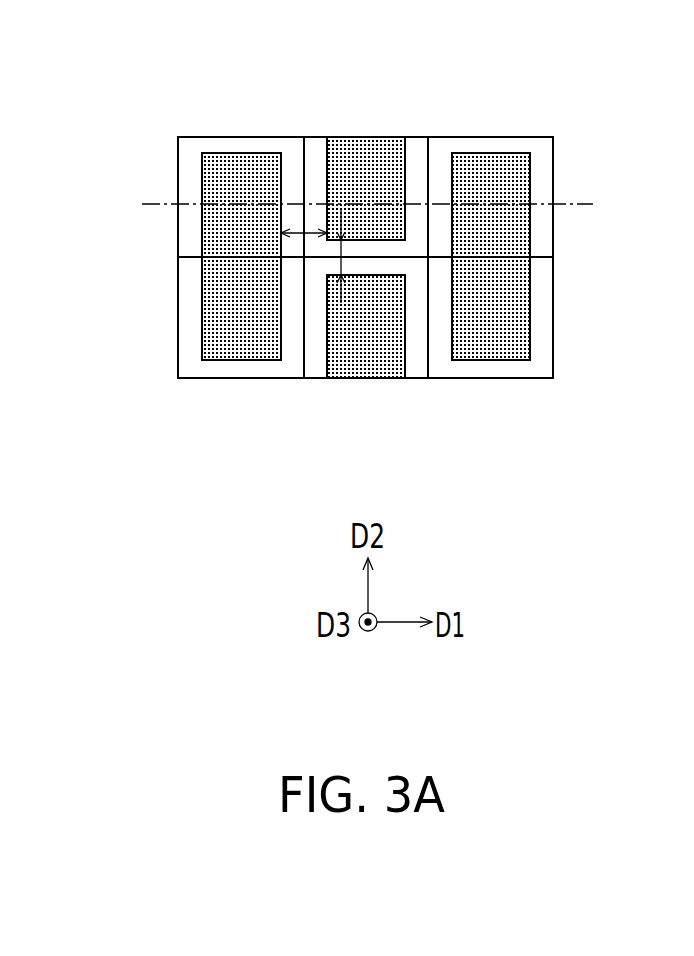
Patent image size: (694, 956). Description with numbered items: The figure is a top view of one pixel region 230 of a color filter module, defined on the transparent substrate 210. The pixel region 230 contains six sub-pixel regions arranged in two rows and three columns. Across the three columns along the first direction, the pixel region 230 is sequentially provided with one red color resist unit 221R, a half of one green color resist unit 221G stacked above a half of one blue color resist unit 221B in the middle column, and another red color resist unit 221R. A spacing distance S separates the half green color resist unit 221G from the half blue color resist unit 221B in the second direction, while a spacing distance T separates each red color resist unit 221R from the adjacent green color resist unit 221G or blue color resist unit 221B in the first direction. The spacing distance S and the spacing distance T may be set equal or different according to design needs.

The transparent substrate 210 is at (190, 137).
The red color resist unit 221R is at (239, 153).
The green color resist unit 221G is at (368, 137).
The blue color resist unit 221B is at (368, 378).
The pixel region 230 is at (398, 717).
The spacing distance T is at (309, 232).
The spacing distance S is at (337, 268).